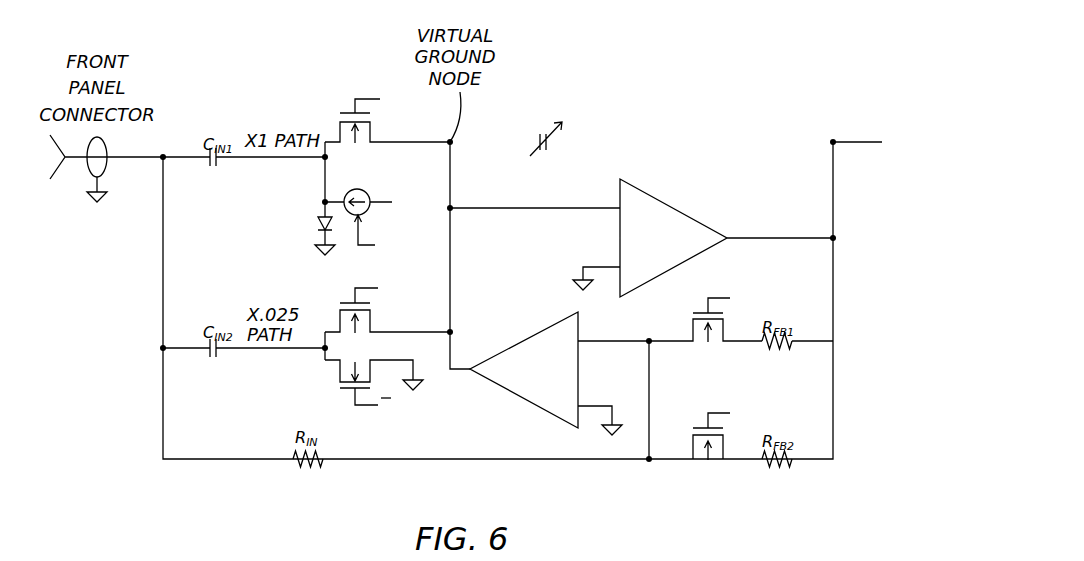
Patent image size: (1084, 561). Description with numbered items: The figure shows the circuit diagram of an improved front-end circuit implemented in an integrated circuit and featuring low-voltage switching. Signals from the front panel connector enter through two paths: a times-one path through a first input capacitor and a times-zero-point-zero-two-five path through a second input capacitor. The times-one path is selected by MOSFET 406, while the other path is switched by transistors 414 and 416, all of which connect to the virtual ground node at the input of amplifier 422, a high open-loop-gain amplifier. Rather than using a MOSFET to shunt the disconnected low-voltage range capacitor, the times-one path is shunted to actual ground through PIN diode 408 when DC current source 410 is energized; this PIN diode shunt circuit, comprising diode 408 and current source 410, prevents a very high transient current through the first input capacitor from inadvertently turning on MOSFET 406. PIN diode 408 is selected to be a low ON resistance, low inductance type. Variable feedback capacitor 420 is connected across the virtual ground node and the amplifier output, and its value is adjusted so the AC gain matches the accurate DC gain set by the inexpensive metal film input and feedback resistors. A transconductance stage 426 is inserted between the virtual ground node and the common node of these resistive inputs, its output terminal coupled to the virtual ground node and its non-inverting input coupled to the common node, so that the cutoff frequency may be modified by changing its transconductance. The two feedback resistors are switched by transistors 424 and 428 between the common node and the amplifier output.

The MOSFET 406 is at (346, 110).
The PIN diode 408 is at (325, 202).
The DC current source 410 is at (366, 191).
The second switch transistor (X.025 path) 414 is at (346, 300).
The third switch transistor 416 is at (346, 393).
The variable feedback capacitor 420 is at (544, 150).
The amplifier 422 is at (704, 252).
The feedback switch transistor A 424 is at (700, 310).
The transconductance stage 426 is at (537, 331).
The feedback switch transistor B 428 is at (700, 426).